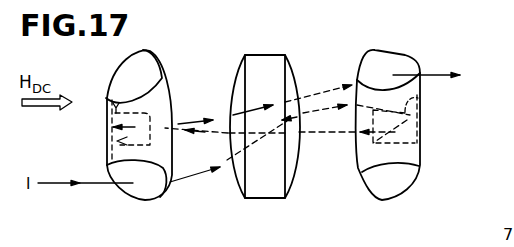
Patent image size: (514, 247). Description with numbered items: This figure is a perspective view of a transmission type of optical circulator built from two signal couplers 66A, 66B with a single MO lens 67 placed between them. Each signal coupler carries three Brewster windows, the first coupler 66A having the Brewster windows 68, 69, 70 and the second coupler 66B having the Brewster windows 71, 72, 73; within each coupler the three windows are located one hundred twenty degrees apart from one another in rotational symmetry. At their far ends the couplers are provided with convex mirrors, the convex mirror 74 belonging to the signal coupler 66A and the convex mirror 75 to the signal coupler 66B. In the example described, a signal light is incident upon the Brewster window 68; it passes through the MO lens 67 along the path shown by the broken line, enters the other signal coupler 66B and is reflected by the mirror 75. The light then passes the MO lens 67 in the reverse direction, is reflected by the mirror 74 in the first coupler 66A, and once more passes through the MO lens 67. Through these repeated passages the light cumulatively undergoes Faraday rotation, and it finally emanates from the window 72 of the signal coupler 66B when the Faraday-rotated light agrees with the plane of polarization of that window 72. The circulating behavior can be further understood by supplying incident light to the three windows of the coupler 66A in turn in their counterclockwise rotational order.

The signal coupler 66A is at (120, 204).
The signal coupler 66B is at (395, 210).
The MO lens 67 is at (260, 199).
The Brewster window 68 is at (142, 193).
The Brewster window 69 is at (124, 80).
The Brewster window 70 is at (108, 146).
The Brewster window 71 is at (397, 186).
The Brewster window 72 is at (397, 72).
The Brewster window 73 is at (412, 144).
The convex mirror 74 is at (110, 101).
The convex mirror 75 is at (418, 97).